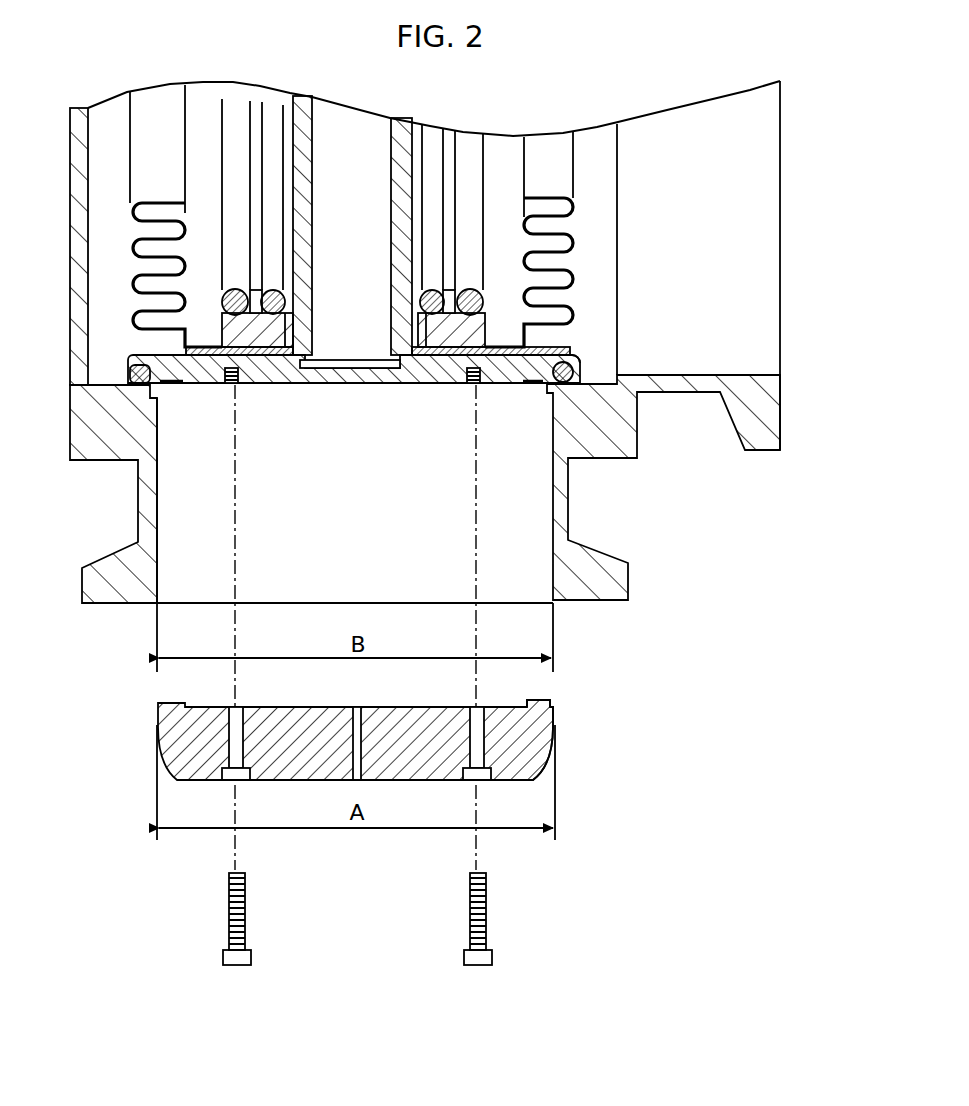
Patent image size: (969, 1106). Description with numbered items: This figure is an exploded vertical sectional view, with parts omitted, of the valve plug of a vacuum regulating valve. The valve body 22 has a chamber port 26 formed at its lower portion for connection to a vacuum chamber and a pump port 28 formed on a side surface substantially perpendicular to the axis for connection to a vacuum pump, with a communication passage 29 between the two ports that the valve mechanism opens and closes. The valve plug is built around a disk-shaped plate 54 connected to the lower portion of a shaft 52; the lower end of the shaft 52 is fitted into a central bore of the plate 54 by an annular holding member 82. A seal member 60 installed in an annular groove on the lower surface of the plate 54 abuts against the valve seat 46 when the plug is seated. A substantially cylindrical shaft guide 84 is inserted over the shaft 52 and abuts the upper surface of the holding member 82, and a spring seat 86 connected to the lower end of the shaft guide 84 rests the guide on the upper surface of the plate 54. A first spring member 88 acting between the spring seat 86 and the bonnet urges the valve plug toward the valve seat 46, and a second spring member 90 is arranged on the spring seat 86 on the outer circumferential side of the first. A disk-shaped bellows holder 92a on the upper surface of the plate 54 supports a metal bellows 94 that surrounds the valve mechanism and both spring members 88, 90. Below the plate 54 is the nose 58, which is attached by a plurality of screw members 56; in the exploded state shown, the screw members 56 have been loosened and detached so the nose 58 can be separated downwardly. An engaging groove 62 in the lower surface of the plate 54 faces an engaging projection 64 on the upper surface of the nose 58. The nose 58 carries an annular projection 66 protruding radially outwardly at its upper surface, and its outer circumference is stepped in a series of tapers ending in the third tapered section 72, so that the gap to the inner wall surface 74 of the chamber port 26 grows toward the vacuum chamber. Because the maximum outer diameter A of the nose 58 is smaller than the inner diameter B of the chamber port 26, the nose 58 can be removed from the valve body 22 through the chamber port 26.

The valve body 22 is at (98, 466).
The chamber port 26 is at (295, 557).
The pump port 28 is at (752, 262).
The communication passage 29 is at (605, 200).
The valve seat 46 is at (128, 369).
The shaft 52 is at (365, 132).
The plate 54 is at (574, 354).
The screw members 56 is at (240, 966).
The nose 58 is at (293, 715).
The seal member 60 is at (575, 393).
The engaging groove 62 is at (533, 383).
The engaging projection 64 is at (534, 702).
The annular projection 66 is at (556, 709).
The third tapered section 72 is at (540, 771).
The inner wall surface 74 is at (157, 500).
The holding member 82 is at (290, 385).
The shaft guide 84 is at (300, 112).
The spring seat 86 is at (440, 358).
The first spring member 88 is at (303, 294).
The second spring member 90 is at (221, 306).
The bellows holder 92a is at (498, 345).
The bellows 94 is at (578, 244).